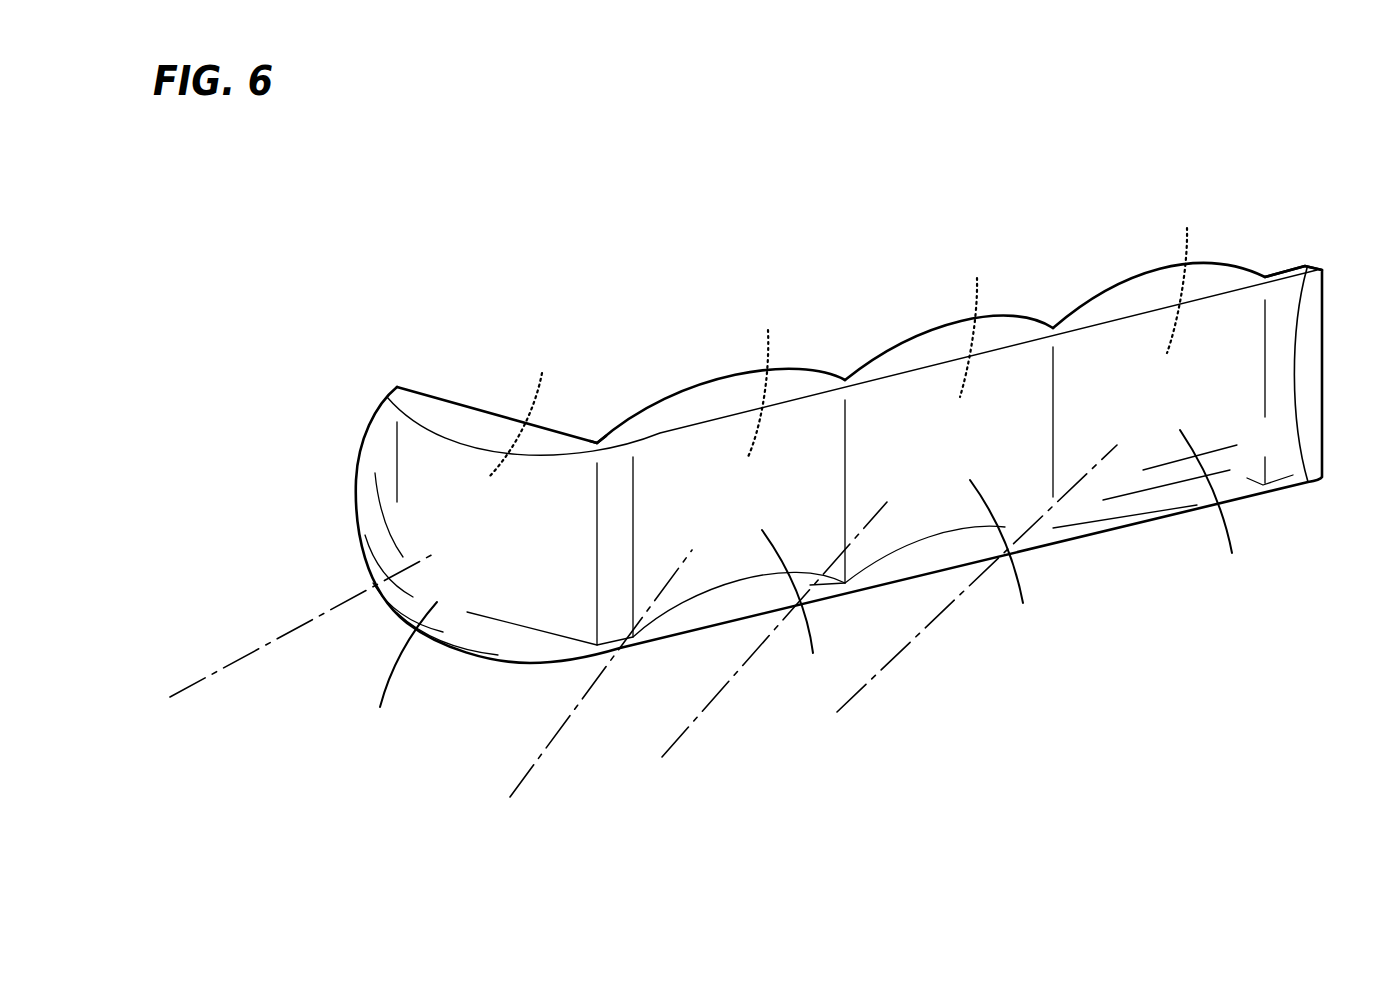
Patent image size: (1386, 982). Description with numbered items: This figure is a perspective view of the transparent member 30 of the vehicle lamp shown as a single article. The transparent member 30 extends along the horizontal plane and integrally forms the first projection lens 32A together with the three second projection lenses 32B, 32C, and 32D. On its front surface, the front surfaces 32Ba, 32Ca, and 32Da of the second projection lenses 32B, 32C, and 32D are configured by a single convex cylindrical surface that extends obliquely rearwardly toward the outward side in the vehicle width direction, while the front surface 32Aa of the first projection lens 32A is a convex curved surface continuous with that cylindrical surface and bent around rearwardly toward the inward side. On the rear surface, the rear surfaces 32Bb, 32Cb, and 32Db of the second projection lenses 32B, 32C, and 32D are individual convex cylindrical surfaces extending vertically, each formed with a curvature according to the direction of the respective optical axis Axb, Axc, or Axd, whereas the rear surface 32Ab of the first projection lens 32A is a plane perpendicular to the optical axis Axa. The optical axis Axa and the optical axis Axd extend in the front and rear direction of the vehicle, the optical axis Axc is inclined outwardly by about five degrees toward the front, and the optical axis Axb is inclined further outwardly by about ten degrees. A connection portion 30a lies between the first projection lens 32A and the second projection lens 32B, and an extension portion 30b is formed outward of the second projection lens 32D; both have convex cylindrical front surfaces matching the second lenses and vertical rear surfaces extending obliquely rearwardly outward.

The transparent member 30 is at (493, 193).
The connection portion 30a is at (605, 437).
The extension portion 30b is at (1285, 278).
The first projection lens 32A is at (363, 430).
The second projection lens 32B is at (718, 365).
The second projection lens 32C is at (945, 310).
The second projection lens 32D is at (1155, 265).
The front surface of the first projection lens 32Aa is at (395, 668).
The front surface of the second projection lens 32Ba is at (800, 607).
The front surface of the second projection lens 32Ca is at (1011, 556).
The front surface of the second projection lens 32Da is at (1221, 506).
The rear surface of the first projection lens 32Ab is at (527, 412).
The rear surface of the second projection lens 32Bb is at (766, 381).
The rear surface of the second projection lens 32Cb is at (976, 325).
The rear surface of the second projection lens 32Db is at (1185, 278).
The optical axis Axa is at (248, 657).
The optical axis Axb is at (552, 742).
The optical axis Axc is at (705, 705).
The optical axis Axd is at (890, 663).